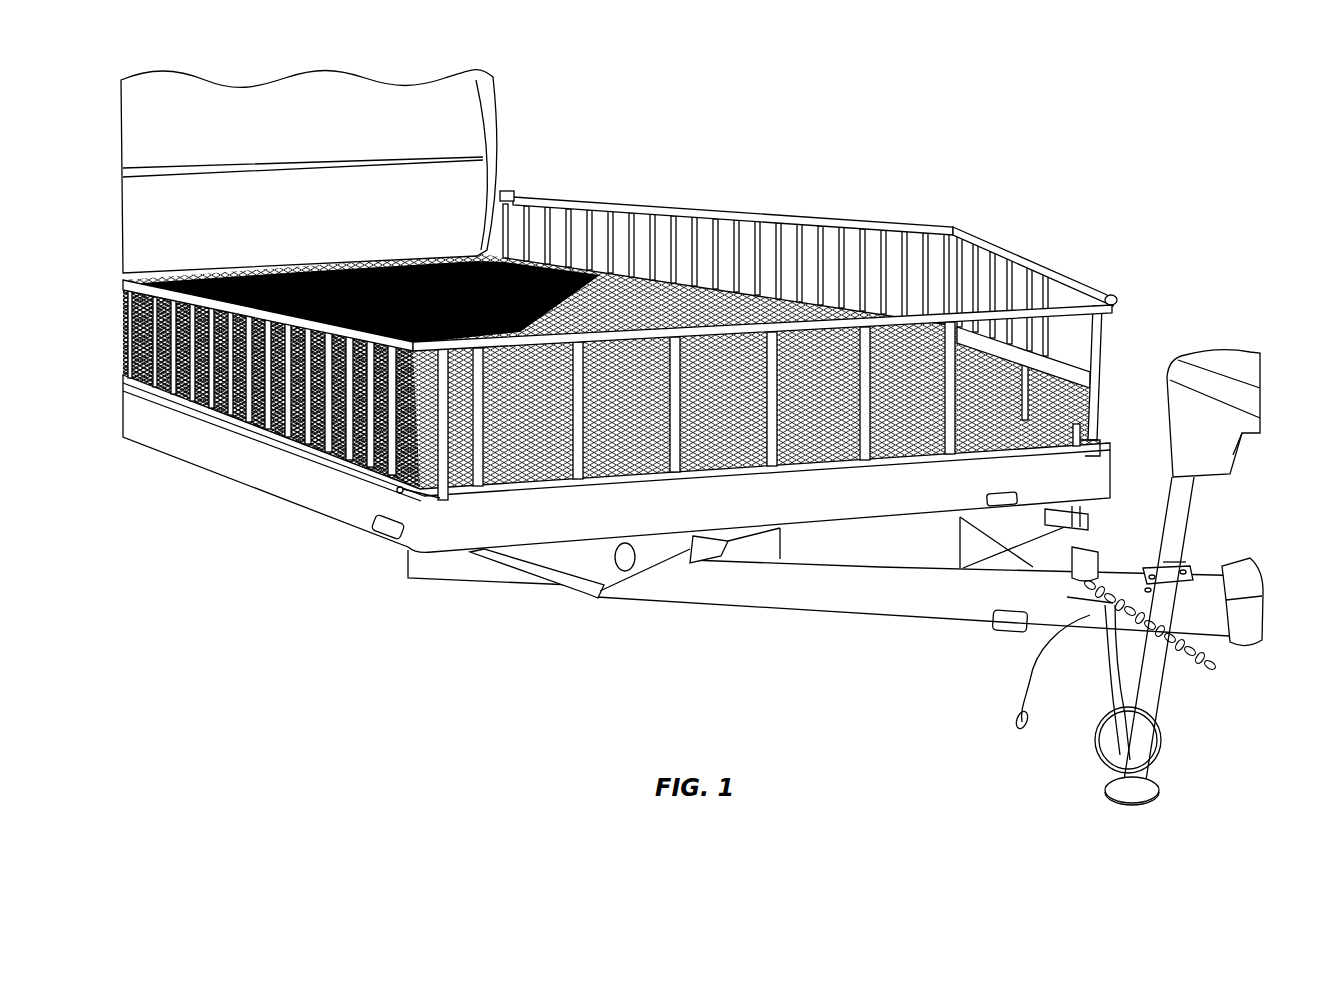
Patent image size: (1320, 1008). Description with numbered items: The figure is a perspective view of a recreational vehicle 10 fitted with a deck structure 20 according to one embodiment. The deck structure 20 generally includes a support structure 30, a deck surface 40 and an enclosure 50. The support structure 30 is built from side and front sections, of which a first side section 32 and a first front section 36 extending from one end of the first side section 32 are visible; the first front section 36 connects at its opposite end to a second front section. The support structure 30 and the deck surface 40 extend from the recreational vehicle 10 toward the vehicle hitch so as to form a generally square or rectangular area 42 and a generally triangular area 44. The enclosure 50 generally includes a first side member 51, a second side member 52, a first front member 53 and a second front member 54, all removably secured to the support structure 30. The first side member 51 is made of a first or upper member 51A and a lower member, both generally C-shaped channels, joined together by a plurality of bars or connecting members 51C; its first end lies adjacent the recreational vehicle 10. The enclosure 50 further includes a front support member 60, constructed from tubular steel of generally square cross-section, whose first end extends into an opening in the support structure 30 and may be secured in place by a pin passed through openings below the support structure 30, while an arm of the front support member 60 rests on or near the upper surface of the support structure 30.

The recreational vehicle 10 is at (463, 124).
The deck structure 20 is at (693, 577).
The support structure 30 is at (616, 505).
The first side section 32 is at (313, 508).
The first front section 36 is at (693, 515).
The deck surface 40 is at (617, 403).
The generally square or rectangular area 42 is at (616, 385).
The generally triangular area 44 is at (908, 418).
The enclosure 50 is at (638, 400).
The first side member 51 is at (268, 350).
The first or upper member 51A is at (263, 310).
The bars or connecting members 51C is at (155, 300).
The second side member 52 is at (667, 249).
The first front member 53 is at (503, 470).
The second front member 54 is at (1041, 295).
The front support member 60 is at (1093, 378).